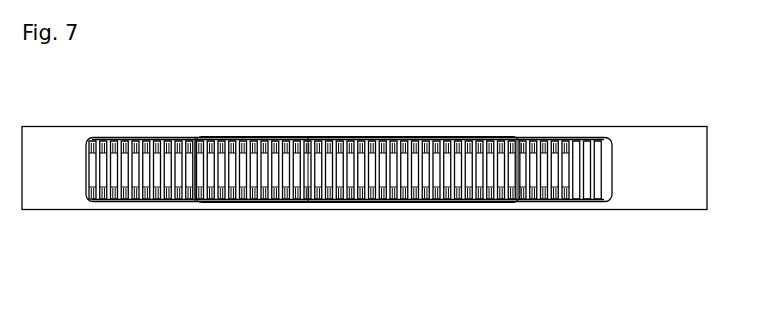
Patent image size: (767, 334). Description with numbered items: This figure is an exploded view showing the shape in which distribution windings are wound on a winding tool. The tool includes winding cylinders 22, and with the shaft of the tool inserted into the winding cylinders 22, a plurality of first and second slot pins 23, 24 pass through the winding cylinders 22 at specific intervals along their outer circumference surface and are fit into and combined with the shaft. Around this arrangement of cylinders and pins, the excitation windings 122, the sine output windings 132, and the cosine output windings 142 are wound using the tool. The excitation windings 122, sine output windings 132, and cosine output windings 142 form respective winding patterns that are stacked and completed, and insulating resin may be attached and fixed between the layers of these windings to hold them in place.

The winding cylinders 22 is at (413, 189).
The first slot pins 23 is at (612, 147).
The second slot pins 24 is at (608, 193).
The excitation windings 122 is at (91, 200).
The sine output windings 132 is at (132, 200).
The cosine output windings 142 is at (202, 200).